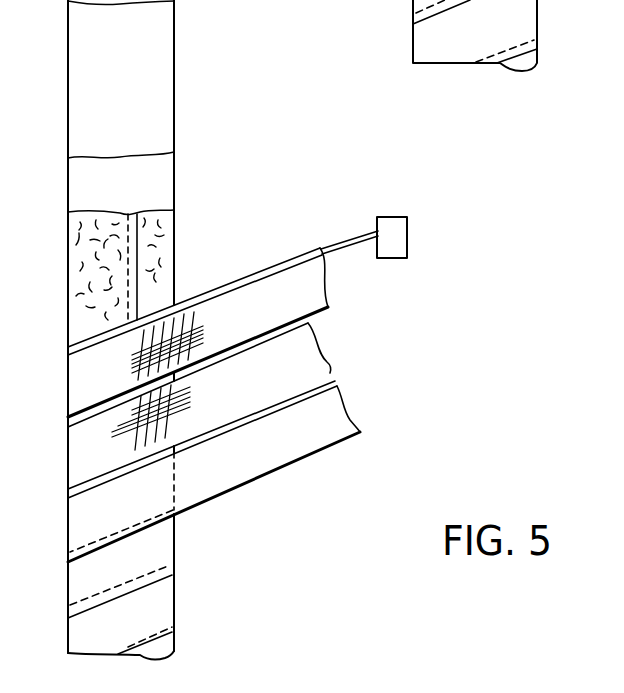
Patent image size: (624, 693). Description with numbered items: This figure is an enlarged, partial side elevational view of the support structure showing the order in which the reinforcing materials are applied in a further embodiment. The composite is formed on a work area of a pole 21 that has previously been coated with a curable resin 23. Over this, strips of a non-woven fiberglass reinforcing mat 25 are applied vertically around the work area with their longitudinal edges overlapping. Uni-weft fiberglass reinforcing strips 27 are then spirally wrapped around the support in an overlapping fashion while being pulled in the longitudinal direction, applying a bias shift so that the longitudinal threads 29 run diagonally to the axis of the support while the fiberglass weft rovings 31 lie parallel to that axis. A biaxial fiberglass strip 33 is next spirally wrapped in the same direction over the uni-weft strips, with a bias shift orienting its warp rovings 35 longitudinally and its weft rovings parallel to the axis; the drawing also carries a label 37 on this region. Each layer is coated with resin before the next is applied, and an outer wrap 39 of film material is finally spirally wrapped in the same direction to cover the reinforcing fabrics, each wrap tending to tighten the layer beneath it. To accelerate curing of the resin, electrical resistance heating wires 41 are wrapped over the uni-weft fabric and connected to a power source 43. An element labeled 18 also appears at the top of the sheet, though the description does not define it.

The panel 18 is at (548, 27).
The pole 21 is at (186, 61).
The curable resin 23 is at (176, 183).
The non-woven fiberglass reinforcing mat 25 is at (175, 250).
The uni-weft fiberglass reinforcing strips 27 is at (331, 309).
The longitudinal threads 29 is at (205, 341).
The fiberglass weft rovings 31 is at (140, 370).
The biaxial fiberglass strip 33 is at (327, 362).
The warp rovings 35 is at (183, 400).
The second mesh lead 37 is at (128, 432).
The outer wrap 39 is at (308, 457).
The electrical resistance heating wires 41 is at (340, 244).
The power source 43 is at (408, 237).